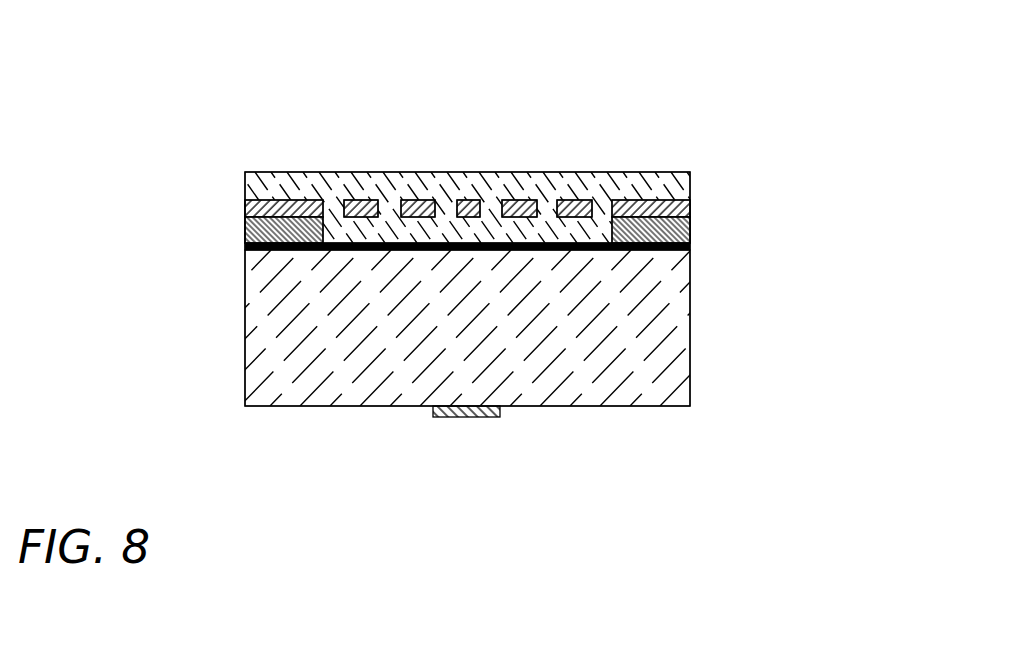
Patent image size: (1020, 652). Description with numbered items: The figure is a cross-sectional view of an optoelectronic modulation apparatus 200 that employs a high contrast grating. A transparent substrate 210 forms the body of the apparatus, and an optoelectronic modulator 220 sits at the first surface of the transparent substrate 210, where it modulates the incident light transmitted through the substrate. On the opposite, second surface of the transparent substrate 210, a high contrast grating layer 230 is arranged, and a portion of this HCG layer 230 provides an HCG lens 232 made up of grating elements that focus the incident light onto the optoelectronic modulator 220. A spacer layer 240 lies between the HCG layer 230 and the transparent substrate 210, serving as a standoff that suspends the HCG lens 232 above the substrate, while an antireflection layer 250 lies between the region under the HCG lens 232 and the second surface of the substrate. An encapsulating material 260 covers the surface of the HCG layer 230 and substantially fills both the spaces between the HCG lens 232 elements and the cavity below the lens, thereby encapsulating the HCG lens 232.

The optoelectronic modulation apparatus 200 is at (745, 73).
The transparent substrate 210 is at (690, 326).
The optoelectronic modulator 220 is at (462, 418).
The high contrast grating (HCG) layer 230 is at (244, 205).
The HCG lens 232 is at (395, 182).
The spacer layer 240 is at (690, 228).
The antireflection layer 250 is at (244, 245).
The encapsulating material 260 is at (690, 182).